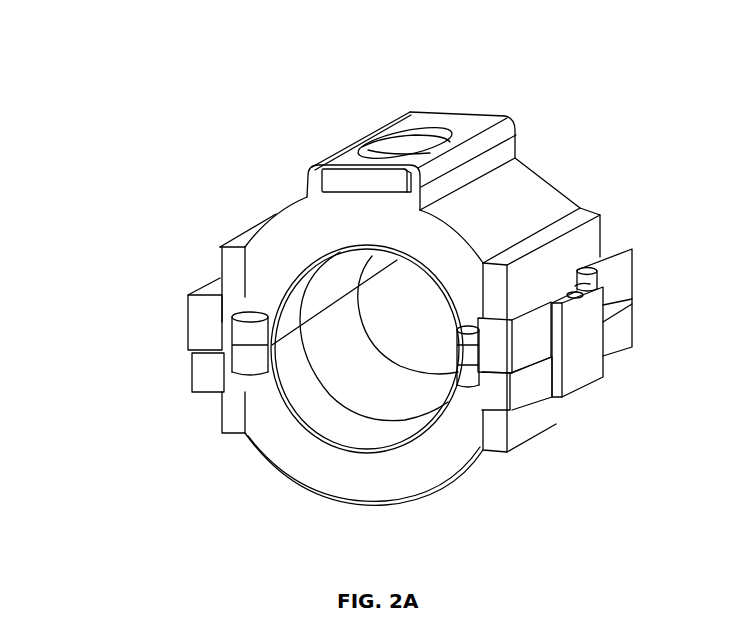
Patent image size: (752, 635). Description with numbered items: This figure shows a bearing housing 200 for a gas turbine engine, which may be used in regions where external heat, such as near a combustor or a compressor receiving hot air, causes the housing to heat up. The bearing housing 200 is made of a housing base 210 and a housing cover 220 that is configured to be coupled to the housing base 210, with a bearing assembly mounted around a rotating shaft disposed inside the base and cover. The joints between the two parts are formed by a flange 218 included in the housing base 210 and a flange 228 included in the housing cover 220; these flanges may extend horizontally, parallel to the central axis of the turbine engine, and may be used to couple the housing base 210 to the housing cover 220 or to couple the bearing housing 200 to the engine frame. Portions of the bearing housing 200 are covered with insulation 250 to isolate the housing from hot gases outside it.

The bearing housing 200 is at (238, 110).
The housing base 210 is at (293, 472).
The housing cover 220 is at (284, 222).
The flange 228 is at (198, 332).
The flange 218 is at (198, 367).
The insulation 250 is at (537, 187).